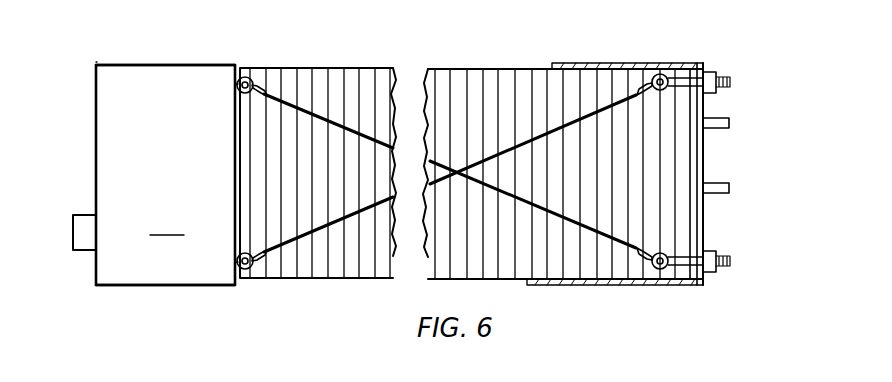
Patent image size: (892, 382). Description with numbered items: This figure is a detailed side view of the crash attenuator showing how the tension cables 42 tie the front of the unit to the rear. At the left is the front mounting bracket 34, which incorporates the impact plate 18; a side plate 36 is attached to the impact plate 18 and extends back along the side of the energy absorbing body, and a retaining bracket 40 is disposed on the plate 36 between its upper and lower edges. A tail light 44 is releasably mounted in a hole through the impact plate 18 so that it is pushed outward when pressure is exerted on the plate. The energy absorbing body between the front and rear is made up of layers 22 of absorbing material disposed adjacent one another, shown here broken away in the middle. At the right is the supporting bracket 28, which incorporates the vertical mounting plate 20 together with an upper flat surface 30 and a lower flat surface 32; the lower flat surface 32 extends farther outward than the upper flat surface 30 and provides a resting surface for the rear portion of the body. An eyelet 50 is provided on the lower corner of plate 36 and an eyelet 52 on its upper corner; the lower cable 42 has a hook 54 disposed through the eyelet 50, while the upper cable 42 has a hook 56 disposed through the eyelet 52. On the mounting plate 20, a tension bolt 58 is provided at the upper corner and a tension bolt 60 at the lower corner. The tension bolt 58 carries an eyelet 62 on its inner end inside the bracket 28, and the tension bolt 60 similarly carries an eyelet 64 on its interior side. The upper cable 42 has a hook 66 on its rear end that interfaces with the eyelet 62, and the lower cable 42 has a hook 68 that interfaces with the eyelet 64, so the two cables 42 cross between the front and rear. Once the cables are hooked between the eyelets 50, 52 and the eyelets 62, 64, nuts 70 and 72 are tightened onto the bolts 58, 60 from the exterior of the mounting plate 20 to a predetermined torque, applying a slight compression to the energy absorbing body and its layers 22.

The impact plate 18 is at (96, 143).
The mounting plate 20 is at (704, 157).
The layers 22 is at (387, 274).
The supporting bracket 28 is at (705, 58).
The upper flat surface 30 is at (641, 63).
The lower flat surface 32 is at (640, 288).
The mounting bracket 34 is at (98, 61).
The plate 36 is at (167, 223).
The retaining bracket 40 is at (165, 65).
The cable 42 is at (316, 111).
The tail light 44 is at (73, 232).
The eyelet 50 is at (243, 279).
The eyelet 52 is at (242, 74).
The lower cable fitting 54 is at (266, 263).
The hook 56 is at (261, 88).
The tension bolt 58 is at (730, 82).
The tension bolt 60 is at (730, 260).
The eyelet 62 is at (668, 74).
The eyelet 64 is at (670, 285).
The hook 66 is at (628, 73).
The hook 68 is at (626, 266).
The nut 70 is at (712, 100).
The nut 72 is at (712, 248).